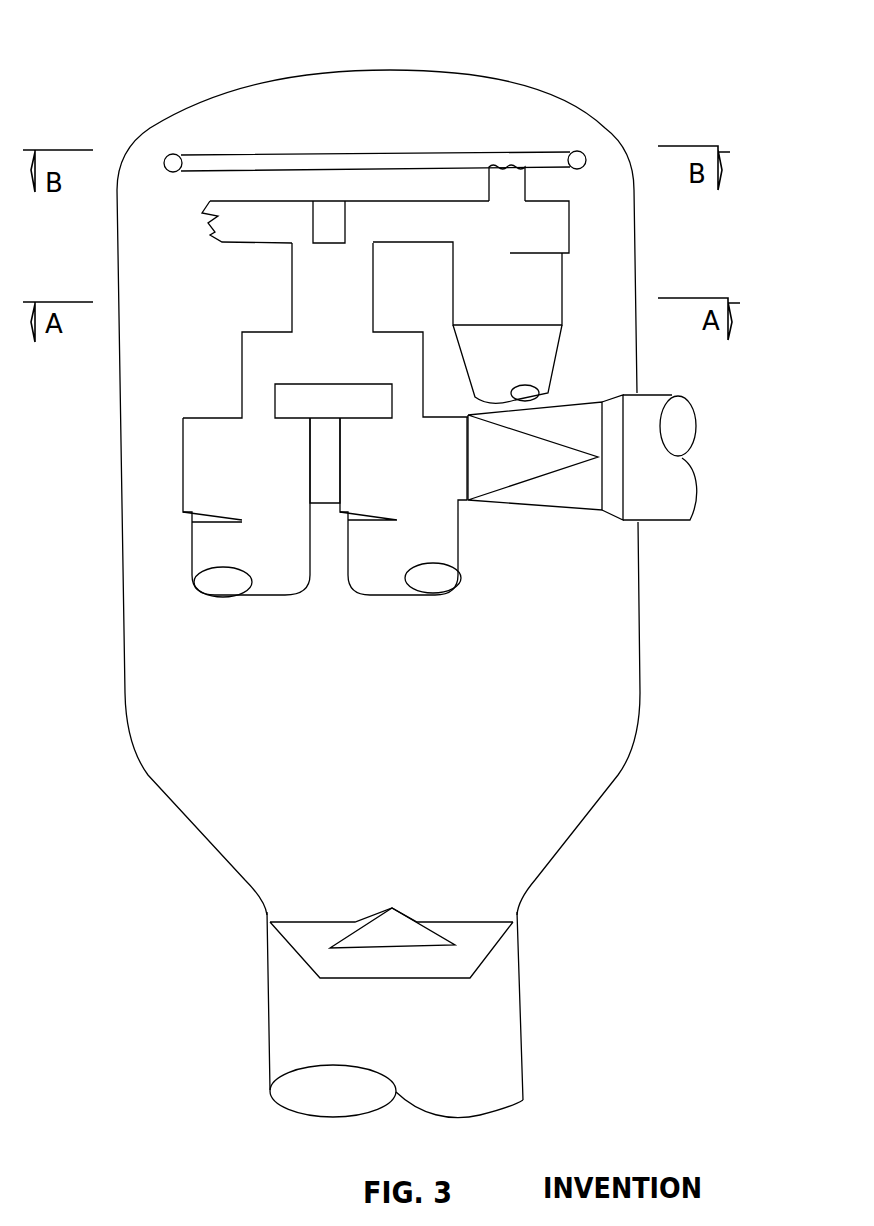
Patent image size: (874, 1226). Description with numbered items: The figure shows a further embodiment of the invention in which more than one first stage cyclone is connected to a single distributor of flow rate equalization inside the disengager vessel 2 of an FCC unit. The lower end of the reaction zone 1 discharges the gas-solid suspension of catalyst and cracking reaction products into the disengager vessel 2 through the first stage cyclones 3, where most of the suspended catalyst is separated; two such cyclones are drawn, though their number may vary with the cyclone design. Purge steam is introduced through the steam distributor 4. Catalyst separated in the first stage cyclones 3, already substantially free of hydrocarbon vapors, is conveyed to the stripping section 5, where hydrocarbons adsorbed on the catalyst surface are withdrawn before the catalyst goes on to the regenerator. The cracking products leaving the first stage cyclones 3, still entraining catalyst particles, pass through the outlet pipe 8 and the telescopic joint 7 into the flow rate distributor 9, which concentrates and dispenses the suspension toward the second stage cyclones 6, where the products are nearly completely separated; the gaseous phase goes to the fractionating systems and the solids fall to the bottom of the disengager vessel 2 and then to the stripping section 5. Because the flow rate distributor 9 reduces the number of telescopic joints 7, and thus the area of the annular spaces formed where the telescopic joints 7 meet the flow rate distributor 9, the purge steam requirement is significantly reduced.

The reaction zone 1 is at (695, 440).
The disengager vessel 2 is at (640, 610).
The first stage cyclones 3 is at (427, 587).
The steam distributor 4 is at (190, 153).
The stripping section 5 is at (520, 975).
The second stage cyclones 6 is at (565, 272).
The telescopic joint 7 is at (292, 273).
The outlet pipe 8 is at (292, 305).
The flow rate distributor 9 is at (292, 256).